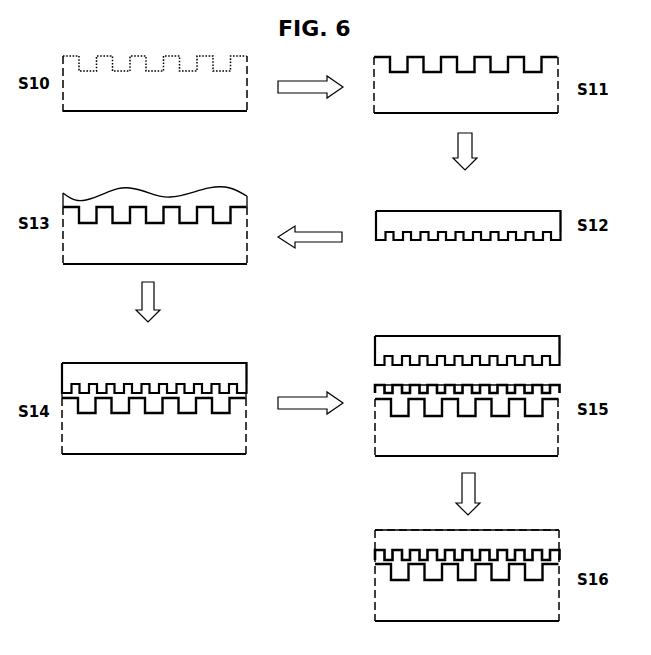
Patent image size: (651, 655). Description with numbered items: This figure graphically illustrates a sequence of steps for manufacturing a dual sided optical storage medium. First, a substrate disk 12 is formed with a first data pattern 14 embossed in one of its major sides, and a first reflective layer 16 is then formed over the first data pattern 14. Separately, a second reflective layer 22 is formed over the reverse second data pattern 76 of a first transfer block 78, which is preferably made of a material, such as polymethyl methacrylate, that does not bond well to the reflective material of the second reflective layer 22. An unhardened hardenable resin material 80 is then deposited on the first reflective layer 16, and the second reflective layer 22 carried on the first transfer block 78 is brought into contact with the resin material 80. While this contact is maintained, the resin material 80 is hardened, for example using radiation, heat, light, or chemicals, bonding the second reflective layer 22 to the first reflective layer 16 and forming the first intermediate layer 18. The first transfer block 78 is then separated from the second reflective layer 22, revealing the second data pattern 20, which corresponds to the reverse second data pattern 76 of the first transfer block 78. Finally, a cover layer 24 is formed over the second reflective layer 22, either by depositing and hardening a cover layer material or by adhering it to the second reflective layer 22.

The substrate disk 12 is at (163, 100).
The first data pattern 14 is at (137, 50).
The first reflective layer 16 is at (559, 55).
The first intermediate layer 18 is at (62, 390).
The second data pattern 20 is at (558, 383).
The second reflective layer 22 is at (246, 392).
The cover layer 24 is at (515, 537).
The reverse second data pattern 76 is at (466, 230).
The first transfer block 78 is at (534, 220).
The hardenable resin material 80 is at (212, 195).